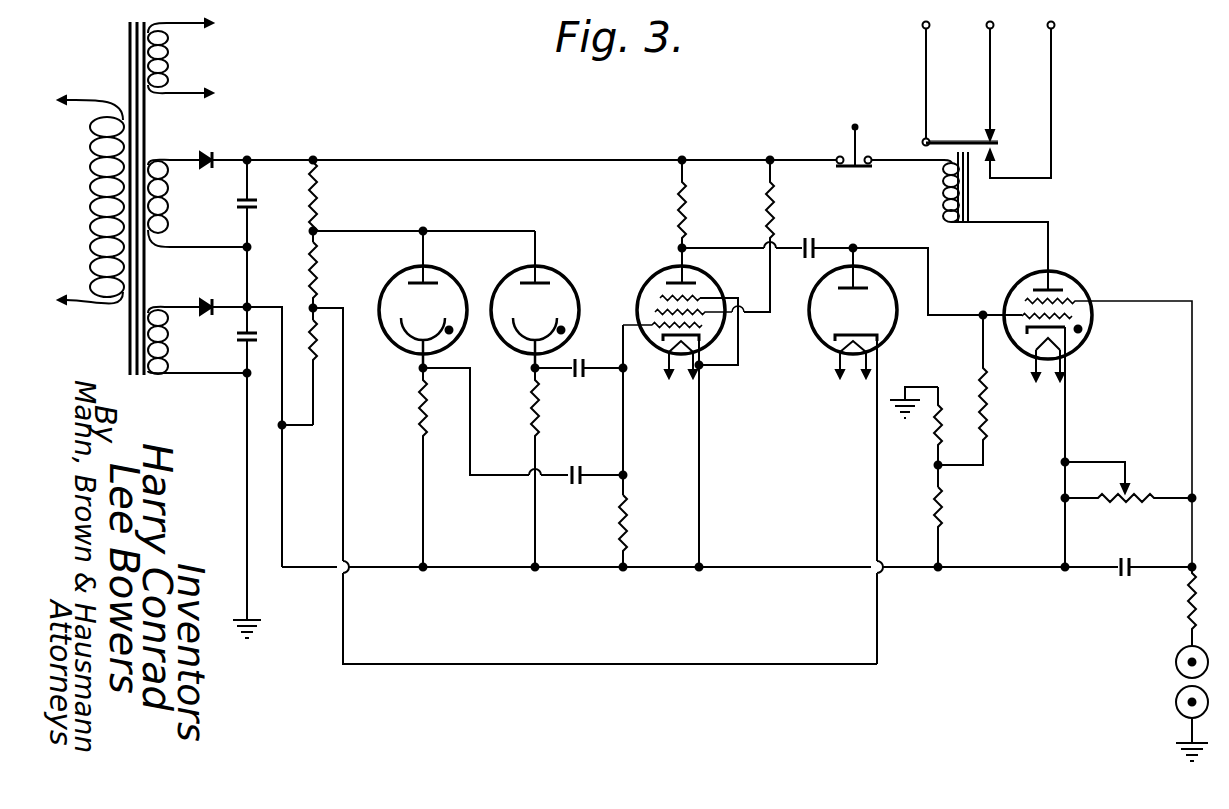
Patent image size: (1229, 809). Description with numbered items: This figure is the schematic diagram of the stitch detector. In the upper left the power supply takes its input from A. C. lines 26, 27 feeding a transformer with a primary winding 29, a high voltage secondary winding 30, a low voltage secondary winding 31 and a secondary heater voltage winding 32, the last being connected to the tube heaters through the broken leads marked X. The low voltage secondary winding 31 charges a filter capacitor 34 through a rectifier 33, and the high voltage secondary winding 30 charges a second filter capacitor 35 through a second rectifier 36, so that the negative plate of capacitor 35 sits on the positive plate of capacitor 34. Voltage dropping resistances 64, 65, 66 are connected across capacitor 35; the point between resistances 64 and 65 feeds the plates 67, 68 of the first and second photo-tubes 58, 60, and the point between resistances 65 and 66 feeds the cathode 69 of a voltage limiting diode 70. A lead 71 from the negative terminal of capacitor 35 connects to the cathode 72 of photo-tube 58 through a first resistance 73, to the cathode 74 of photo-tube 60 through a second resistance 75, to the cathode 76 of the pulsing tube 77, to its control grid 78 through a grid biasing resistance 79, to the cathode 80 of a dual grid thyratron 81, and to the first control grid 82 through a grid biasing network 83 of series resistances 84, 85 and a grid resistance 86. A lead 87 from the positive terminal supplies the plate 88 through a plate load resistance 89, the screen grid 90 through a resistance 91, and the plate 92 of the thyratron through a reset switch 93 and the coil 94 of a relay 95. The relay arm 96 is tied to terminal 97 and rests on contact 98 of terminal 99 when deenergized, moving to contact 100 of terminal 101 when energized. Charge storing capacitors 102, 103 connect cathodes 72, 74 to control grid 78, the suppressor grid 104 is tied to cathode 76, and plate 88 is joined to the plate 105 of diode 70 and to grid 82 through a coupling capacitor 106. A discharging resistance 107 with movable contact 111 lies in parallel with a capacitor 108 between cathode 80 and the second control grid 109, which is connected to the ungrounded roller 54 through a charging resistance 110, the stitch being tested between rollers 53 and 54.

The A. C. line 26 is at (80, 308).
The A. C. line 27 is at (80, 95).
The primary winding 29 is at (92, 185).
The high voltage secondary winding 30 is at (168, 205).
The low voltage secondary winding 31 is at (168, 350).
The secondary heater voltage winding 32 is at (168, 62).
The rectifier 33 is at (208, 298).
The filter capacitor 34 is at (236, 345).
The second filter capacitor 35 is at (260, 205).
The second rectifier 36 is at (215, 150).
The roller 53 is at (1176, 702).
The ungrounded roller 54 is at (1176, 662).
The first photo-tube 58 is at (452, 280).
The second photo-tube 60 is at (575, 285).
The voltage dropping resistance 64 is at (320, 192).
The voltage dropping resistance 65 is at (318, 280).
The voltage dropping resistance 66 is at (320, 370).
The plate 67 is at (405, 283).
The plate 68 is at (545, 280).
The cathode 69 is at (880, 338).
The voltage limiting diode 70 is at (893, 288).
The lead 71 is at (288, 572).
The cathode 72 is at (405, 328).
The first resistance 73 is at (418, 415).
The cathode 74 is at (522, 328).
The second resistance 75 is at (540, 425).
The cathode 76 is at (667, 345).
The pulsing tube 77 is at (650, 272).
The control grid 78 is at (655, 312).
The grid biasing resistance 79 is at (628, 520).
The cathode 80 is at (1070, 335).
The dual grid thyratron 81 is at (1065, 285).
The first control grid 82 is at (1022, 314).
The grid biasing network 83 is at (951, 475).
The series resistance 84 is at (942, 515).
The series resistance 85 is at (930, 430).
The grid resistance 86 is at (988, 405).
The lead 87 is at (515, 158).
The plate 88 is at (697, 282).
The plate load resistance 89 is at (688, 215).
The screen grid 90 is at (738, 340).
The resistance 91 is at (776, 215).
The plate 92 is at (1060, 272).
The reset switch 93 is at (852, 148).
The coil 94 is at (940, 185).
The relay 95 is at (966, 128).
The relay arm 96 is at (940, 142).
The terminal 97 is at (930, 30).
The contact 98 is at (993, 135).
The terminal 99 is at (994, 30).
The contact 100 is at (994, 156).
The terminal 101 is at (1055, 30).
The charge storing capacitor 102 is at (575, 485).
The charge storing capacitor 103 is at (585, 375).
The suppressor grid 104 is at (700, 296).
The plate 105 is at (860, 285).
The coupling capacitor 106 is at (812, 240).
The discharging resistance 107 is at (1148, 495).
The capacitor 108 is at (1123, 578).
The second control grid 109 is at (1072, 299).
The charging resistance 110 is at (1188, 610).
The movable contact 111 is at (1132, 475).